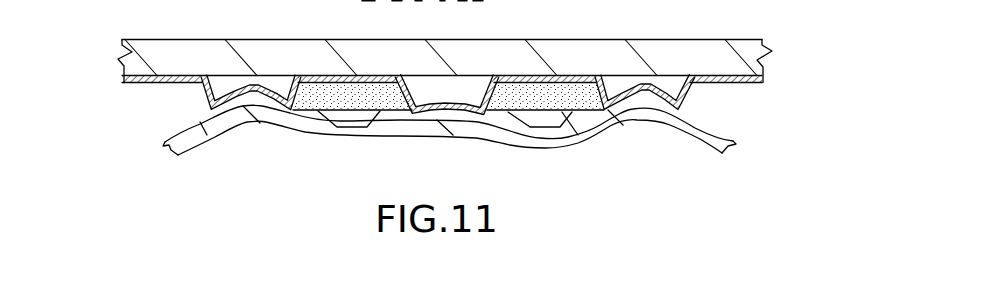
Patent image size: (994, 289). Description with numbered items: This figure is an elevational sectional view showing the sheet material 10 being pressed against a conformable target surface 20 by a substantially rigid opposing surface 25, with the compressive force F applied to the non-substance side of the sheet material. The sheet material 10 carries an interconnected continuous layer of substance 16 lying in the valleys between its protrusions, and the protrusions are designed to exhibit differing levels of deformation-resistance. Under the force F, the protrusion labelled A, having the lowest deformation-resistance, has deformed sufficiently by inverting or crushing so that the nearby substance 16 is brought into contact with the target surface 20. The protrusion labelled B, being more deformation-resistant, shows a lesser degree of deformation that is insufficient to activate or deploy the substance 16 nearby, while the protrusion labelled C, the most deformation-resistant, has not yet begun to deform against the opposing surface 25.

The sheet material 10 is at (738, 110).
The substance 16 is at (313, 106).
The target surface 20 is at (665, 50).
The opposing surface 25 is at (702, 136).
The protrusion A is at (206, 96).
The protrusion B is at (490, 121).
The protrusion C is at (390, 120).
The force F is at (245, 122).